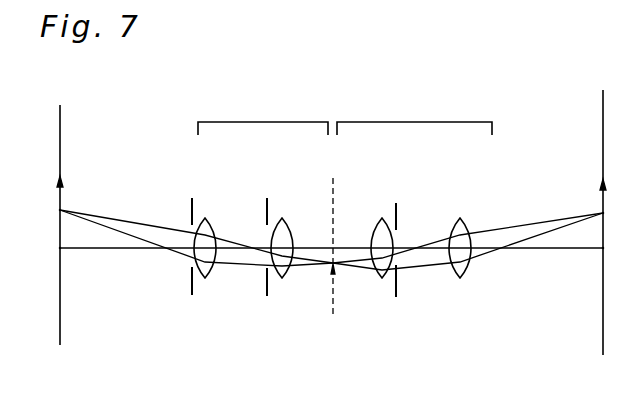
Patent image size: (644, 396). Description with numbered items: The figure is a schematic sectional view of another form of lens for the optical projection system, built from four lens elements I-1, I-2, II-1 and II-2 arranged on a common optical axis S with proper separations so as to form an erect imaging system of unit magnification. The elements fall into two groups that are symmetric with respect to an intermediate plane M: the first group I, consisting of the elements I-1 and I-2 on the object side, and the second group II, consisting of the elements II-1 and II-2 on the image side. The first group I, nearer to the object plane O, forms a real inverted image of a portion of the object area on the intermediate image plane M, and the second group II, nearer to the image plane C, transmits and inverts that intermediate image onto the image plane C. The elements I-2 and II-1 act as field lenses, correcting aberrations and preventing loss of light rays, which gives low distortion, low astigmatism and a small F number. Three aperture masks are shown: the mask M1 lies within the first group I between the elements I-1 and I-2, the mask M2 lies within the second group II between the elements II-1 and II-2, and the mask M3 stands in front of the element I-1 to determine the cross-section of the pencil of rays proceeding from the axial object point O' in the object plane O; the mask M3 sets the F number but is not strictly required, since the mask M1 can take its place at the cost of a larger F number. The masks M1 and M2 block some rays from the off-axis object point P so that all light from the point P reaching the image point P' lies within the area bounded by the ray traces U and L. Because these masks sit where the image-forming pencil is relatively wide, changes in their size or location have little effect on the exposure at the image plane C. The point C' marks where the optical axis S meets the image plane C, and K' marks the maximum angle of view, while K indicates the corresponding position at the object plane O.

The object plane O is at (91, 210).
The image plane C is at (573, 217).
The object-side reference point K is at (89, 162).
The maximum angle of view K' is at (573, 166).
The intermediate image plane M is at (333, 318).
The aperture mask M1 is at (267, 200).
The aperture mask M2 is at (397, 202).
The aperture mask M3 is at (189, 200).
The ray trace U is at (114, 220).
The ray trace L is at (98, 228).
The optical axis S is at (124, 250).
The off-axis object point P is at (49, 211).
The image point P' is at (615, 209).
The axial object point O' is at (51, 248).
The point of intersection C' is at (617, 256).
The first lens element I-1 is at (203, 217).
The second lens element I-2 is at (281, 217).
The third lens element II-1 is at (381, 217).
The fourth lens element II-2 is at (458, 217).
The first lens element group I is at (270, 115).
The second lens element group II is at (428, 115).